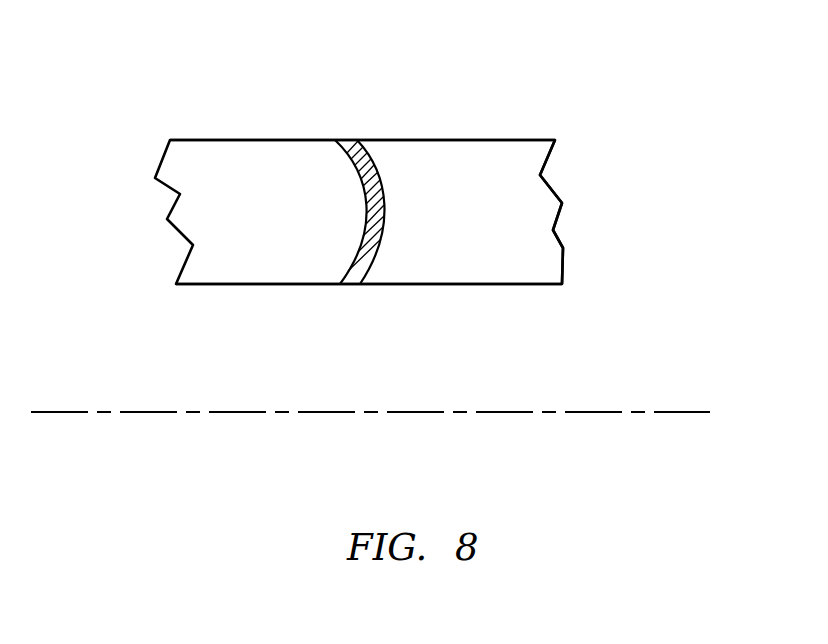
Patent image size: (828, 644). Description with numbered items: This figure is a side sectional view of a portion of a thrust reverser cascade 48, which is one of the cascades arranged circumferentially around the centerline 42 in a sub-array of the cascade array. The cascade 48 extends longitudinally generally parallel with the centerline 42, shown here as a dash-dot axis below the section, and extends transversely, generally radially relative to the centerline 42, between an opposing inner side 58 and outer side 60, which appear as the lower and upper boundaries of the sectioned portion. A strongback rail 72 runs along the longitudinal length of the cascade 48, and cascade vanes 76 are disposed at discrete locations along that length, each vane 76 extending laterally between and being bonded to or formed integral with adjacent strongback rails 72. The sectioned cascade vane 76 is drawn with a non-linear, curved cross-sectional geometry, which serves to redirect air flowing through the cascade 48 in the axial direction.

The thrust reverser cascade 48 is at (592, 133).
The outer side 60 is at (485, 140).
The inner side 58 is at (485, 284).
The strongback rail 72 is at (557, 235).
The cascade vane 76 is at (373, 260).
The centerline 42 is at (670, 412).